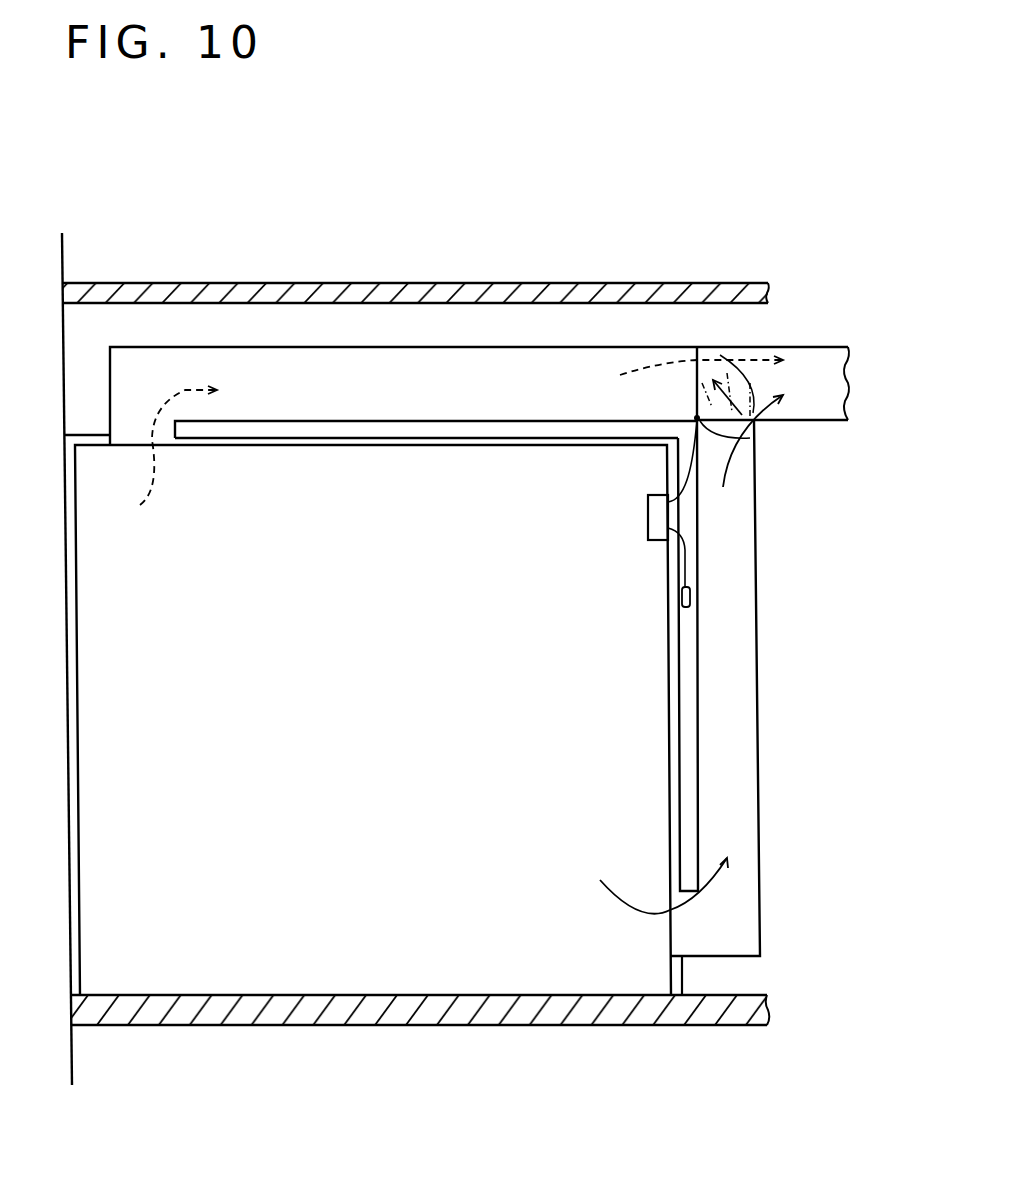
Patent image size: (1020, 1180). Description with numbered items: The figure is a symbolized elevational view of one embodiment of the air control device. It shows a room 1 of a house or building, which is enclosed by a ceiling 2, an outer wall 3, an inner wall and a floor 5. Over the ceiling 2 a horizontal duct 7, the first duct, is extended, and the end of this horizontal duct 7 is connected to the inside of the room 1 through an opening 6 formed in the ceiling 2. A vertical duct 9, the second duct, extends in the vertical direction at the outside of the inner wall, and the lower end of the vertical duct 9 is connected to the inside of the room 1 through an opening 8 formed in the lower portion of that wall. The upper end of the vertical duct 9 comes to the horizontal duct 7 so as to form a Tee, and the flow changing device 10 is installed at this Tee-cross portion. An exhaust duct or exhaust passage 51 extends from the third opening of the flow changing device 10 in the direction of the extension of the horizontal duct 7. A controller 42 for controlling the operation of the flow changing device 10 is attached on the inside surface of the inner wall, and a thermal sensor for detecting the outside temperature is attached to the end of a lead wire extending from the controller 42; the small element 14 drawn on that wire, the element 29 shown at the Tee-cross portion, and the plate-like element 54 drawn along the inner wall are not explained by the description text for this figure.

The room 1 is at (190, 952).
The ceiling 2 is at (450, 447).
The outer wall 3 is at (71, 920).
The floor 5 is at (383, 1027).
The opening 6 is at (132, 450).
The horizontal duct 7 is at (247, 382).
The opening 8 is at (662, 946).
The vertical duct 9 is at (716, 703).
The flow changing device 10 is at (763, 384).
The sensor 14 is at (697, 602).
The fan 29 is at (698, 372).
The controller 42 is at (653, 522).
The exhaust passage 51 is at (808, 412).
The guide plate 54 is at (672, 789).